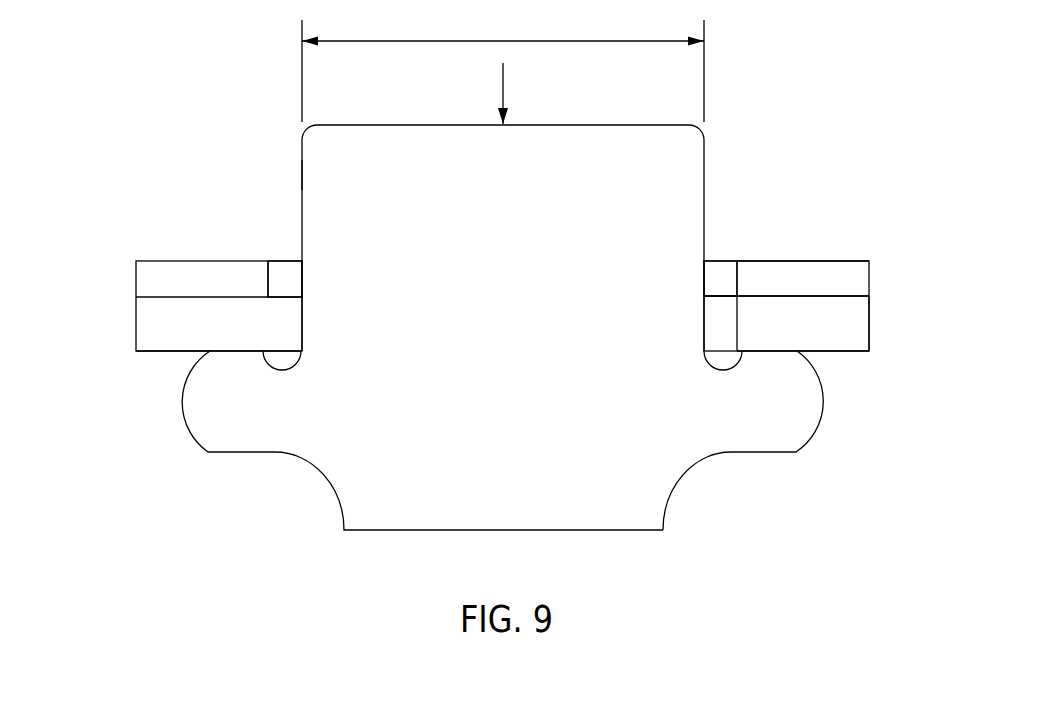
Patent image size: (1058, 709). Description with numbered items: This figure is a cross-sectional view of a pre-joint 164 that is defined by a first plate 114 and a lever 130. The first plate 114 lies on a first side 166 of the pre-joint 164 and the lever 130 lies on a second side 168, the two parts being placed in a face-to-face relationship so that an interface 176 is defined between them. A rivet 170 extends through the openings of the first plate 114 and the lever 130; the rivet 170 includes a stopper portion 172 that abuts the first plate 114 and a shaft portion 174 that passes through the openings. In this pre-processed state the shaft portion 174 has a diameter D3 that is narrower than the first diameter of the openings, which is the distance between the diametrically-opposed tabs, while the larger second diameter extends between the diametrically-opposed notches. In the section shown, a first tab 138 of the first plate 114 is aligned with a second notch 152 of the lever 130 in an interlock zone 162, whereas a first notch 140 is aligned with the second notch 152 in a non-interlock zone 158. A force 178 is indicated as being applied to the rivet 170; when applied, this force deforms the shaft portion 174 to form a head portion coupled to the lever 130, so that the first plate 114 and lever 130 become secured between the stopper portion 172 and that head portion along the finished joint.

The first plate 114 is at (869, 345).
The lever 130 is at (869, 268).
The first tab 138 is at (287, 323).
The first notch 140 is at (718, 323).
The second notch 152 is at (284, 276).
The non-interlock zone 158 is at (884, 360).
The interlock zone 162 is at (122, 342).
The pre-joint 164 is at (745, 74).
The first side 166 is at (864, 401).
The second side 168 is at (864, 194).
The rivet 170 is at (665, 512).
The stopper portion 172 is at (229, 455).
The shaft portion 174 is at (302, 172).
The interface 176 is at (869, 296).
The force 178 is at (503, 80).
The diameter of shaft portion D3 is at (432, 40).